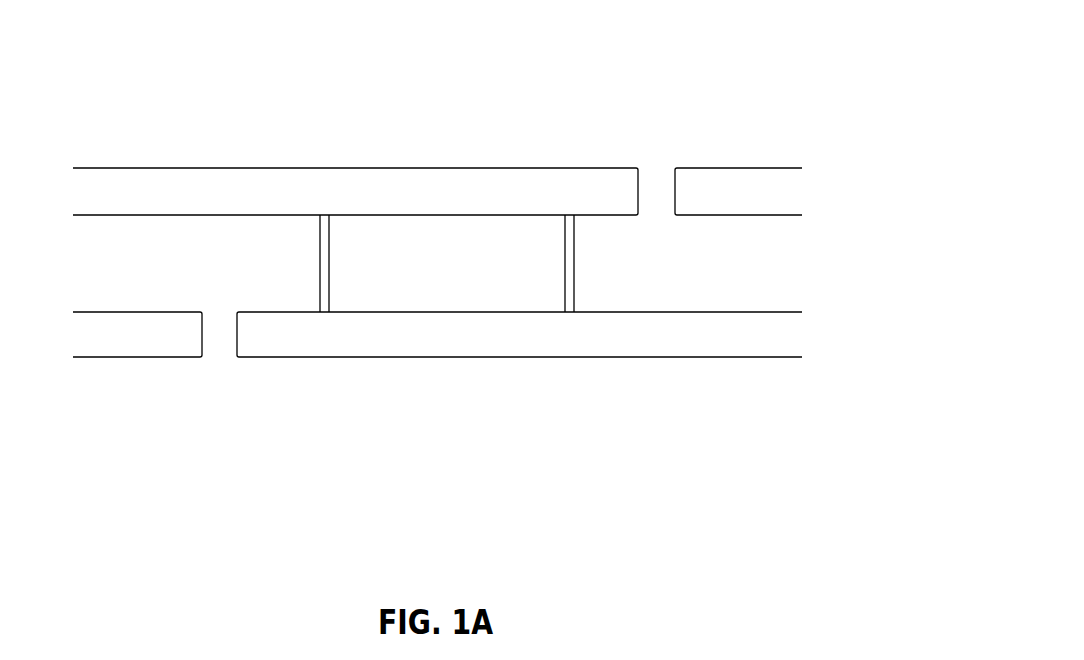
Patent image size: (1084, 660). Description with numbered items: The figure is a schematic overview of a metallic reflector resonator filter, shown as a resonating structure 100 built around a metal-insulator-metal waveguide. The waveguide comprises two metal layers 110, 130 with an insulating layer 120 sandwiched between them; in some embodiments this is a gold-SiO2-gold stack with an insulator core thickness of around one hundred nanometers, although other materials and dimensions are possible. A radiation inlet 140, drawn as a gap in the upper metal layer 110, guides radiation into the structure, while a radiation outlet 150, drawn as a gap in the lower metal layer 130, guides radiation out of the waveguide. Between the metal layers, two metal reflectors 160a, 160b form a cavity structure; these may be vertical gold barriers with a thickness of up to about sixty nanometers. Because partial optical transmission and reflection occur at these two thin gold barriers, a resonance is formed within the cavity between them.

The resonating structure 100 is at (663, 85).
The metal layer 110 is at (160, 168).
The insulating layer 120 is at (722, 293).
The metal layer 130 is at (167, 357).
The radiation inlet 140 is at (670, 162).
The radiation outlet 150 is at (228, 362).
The metal reflector 160a is at (331, 282).
The metal reflector 160b is at (575, 287).